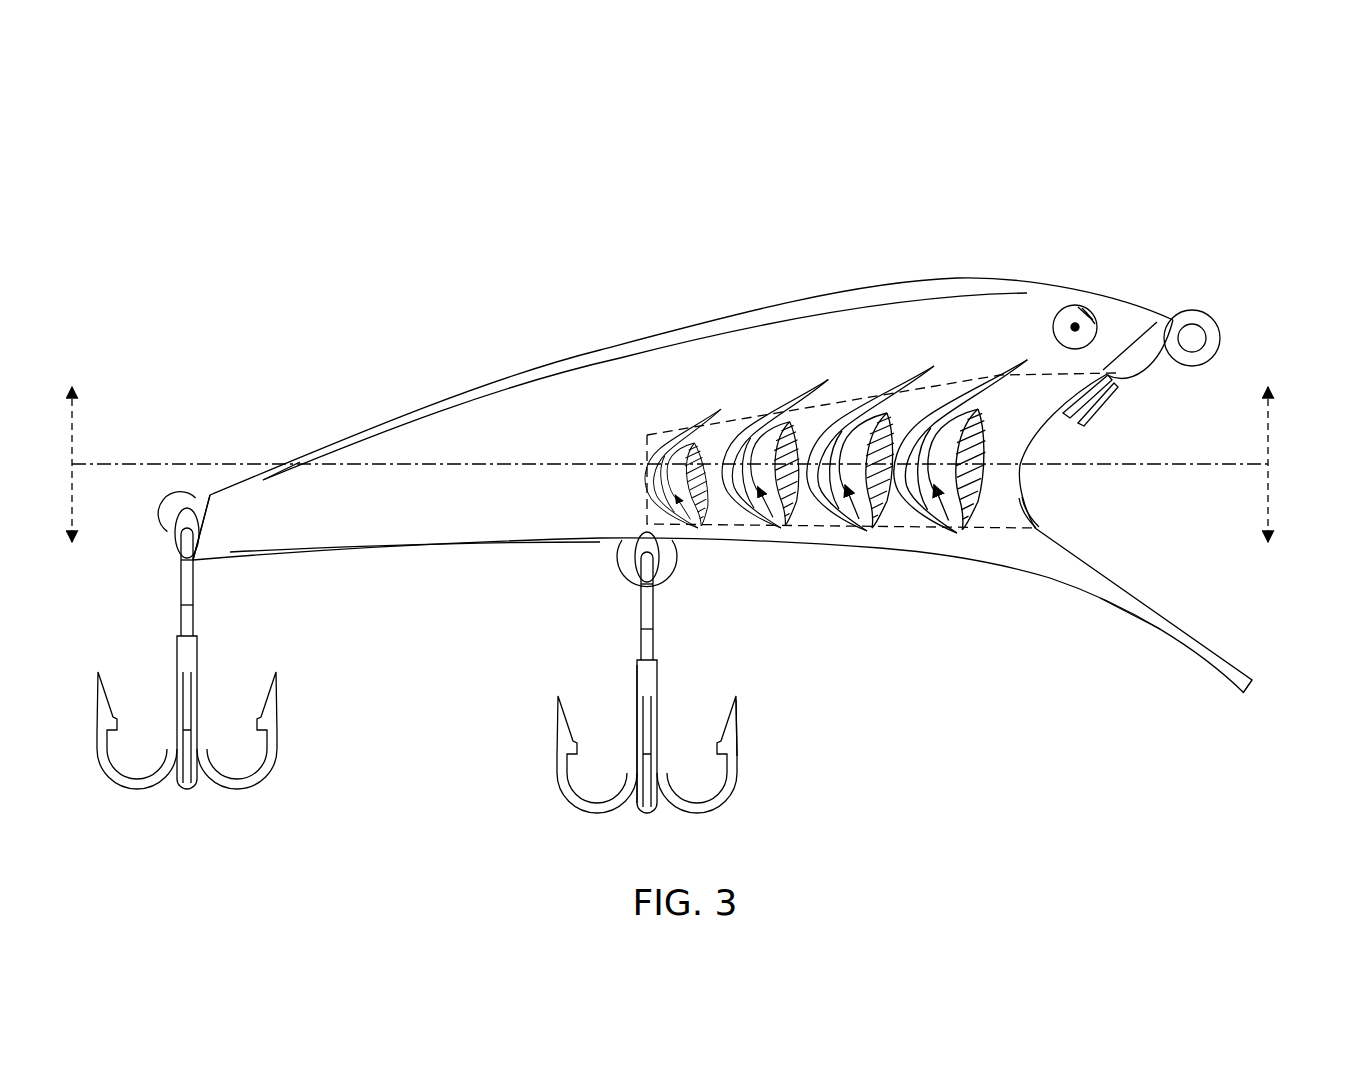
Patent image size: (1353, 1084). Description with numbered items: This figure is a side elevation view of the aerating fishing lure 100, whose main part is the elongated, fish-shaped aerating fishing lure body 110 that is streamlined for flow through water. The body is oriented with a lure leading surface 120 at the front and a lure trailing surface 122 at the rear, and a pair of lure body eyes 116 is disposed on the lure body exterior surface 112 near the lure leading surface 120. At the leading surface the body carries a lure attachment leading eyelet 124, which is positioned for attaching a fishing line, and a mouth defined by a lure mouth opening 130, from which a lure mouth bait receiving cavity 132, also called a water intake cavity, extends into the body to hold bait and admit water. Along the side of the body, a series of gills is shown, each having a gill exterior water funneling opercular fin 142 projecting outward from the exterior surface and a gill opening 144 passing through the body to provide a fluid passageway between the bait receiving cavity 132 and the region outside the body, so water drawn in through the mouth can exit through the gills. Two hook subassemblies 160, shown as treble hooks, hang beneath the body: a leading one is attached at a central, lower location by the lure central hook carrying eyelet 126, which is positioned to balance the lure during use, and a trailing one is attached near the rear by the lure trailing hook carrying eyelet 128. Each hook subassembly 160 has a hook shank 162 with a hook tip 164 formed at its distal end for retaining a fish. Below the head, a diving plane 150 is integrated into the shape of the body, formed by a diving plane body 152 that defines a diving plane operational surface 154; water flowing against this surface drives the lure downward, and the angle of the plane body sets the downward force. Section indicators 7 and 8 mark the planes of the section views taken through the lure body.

The section line 7 is at (670, 451).
The section line 8 is at (670, 550).
The aerating fishing lure 100 is at (720, 387).
The aerating fishing lure body 110 is at (650, 300).
The lure body exterior surface 112 is at (475, 517).
The lure body eyes 116 is at (1083, 313).
The lure leading surface 120 is at (1160, 240).
The lure trailing surface 122 is at (277, 428).
The lure attachment leading eyelet 124 is at (1217, 327).
The lure central hook carrying eyelet 126 is at (620, 572).
The lure trailing hook carrying eyelet 128 is at (165, 538).
The lure mouth opening 130 is at (853, 385).
The lure mouth bait receiving cavity 132 is at (1026, 471).
The gill exterior water funneling opercular fin 142 is at (715, 443).
The gill openings 144 is at (957, 533).
The diving plane 150 is at (1189, 635).
The diving plane body 152 is at (1252, 687).
The diving plane operational surface 154 is at (1213, 650).
The hook subassembly 160 is at (454, 652).
The hook shank 162 is at (637, 692).
The hook tip 164 is at (736, 727).